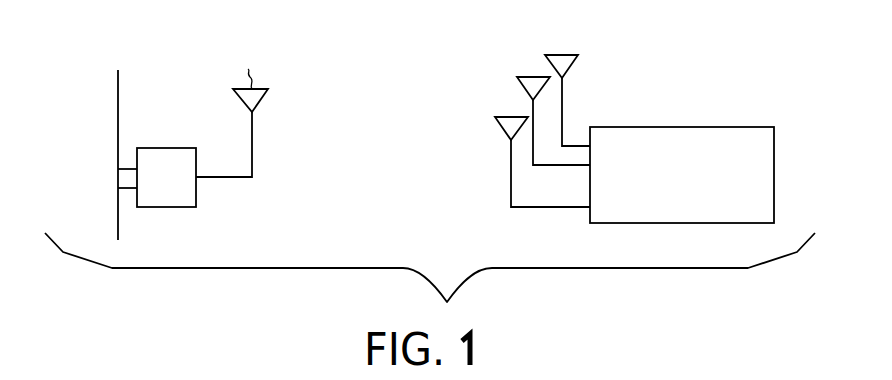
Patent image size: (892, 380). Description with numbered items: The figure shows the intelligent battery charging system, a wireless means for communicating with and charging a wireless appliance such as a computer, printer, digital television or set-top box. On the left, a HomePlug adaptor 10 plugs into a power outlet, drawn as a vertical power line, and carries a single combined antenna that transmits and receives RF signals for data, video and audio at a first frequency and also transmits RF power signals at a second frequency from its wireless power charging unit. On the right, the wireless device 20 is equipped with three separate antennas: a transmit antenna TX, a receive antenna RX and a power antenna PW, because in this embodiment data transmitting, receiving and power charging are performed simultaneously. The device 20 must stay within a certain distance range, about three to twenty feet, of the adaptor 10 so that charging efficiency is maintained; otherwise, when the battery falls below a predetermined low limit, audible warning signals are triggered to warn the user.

The HomePlug adaptor 10 is at (172, 177).
The wireless device 20 is at (633, 117).
The transmit antenna TX is at (510, 117).
The receive antenna RX is at (527, 77).
The power antenna PW is at (570, 55).